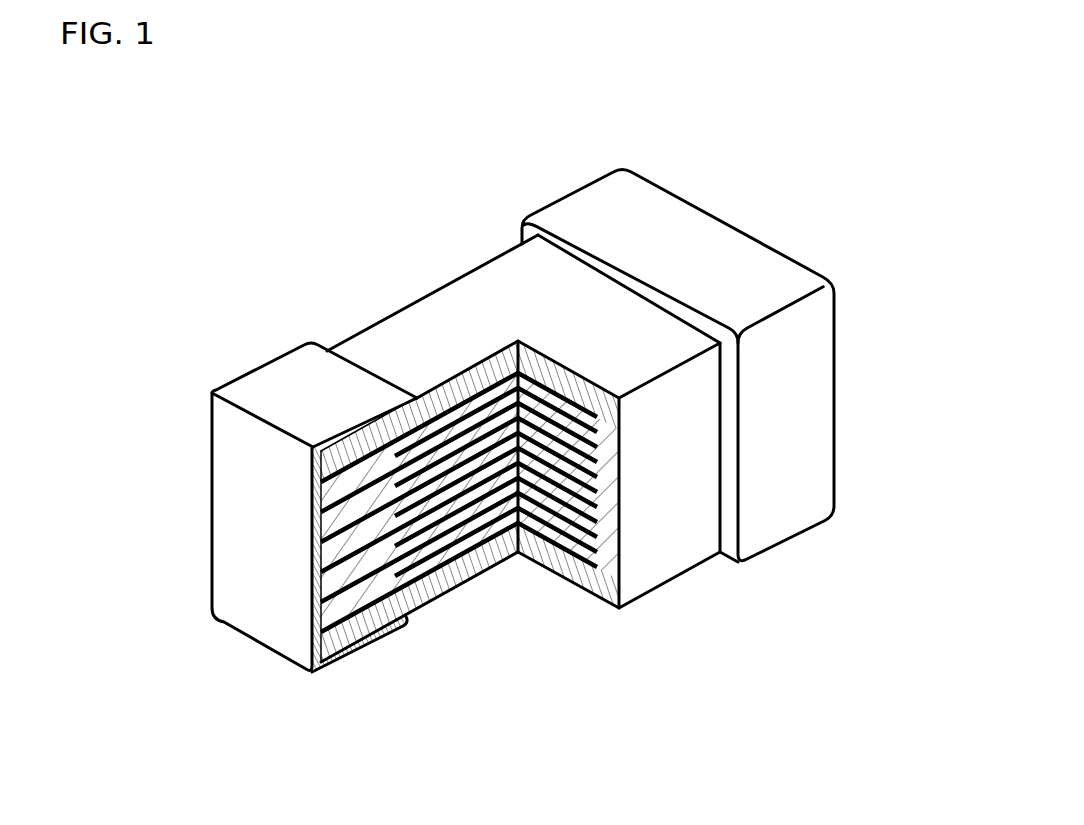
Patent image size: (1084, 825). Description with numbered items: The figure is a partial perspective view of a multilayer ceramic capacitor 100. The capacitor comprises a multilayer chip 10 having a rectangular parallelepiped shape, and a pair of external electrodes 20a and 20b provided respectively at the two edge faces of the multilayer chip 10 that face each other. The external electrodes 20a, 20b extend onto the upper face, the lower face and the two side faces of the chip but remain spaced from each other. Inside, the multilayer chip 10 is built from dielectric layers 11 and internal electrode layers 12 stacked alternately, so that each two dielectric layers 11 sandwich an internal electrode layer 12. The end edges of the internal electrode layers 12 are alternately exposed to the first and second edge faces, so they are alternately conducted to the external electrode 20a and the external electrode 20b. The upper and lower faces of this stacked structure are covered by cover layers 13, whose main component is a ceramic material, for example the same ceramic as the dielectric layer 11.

The multilayer ceramic capacitor 100 is at (937, 95).
The multilayer chip 10 is at (373, 325).
The dielectric layer 11 is at (437, 562).
The internal electrode layer 12 is at (473, 537).
The cover layer 13 is at (487, 281).
The external electrode 20a is at (273, 360).
The external electrode 20b is at (578, 205).